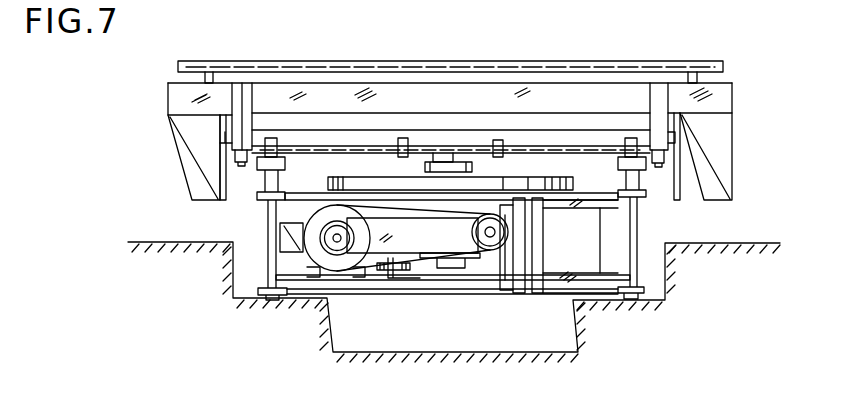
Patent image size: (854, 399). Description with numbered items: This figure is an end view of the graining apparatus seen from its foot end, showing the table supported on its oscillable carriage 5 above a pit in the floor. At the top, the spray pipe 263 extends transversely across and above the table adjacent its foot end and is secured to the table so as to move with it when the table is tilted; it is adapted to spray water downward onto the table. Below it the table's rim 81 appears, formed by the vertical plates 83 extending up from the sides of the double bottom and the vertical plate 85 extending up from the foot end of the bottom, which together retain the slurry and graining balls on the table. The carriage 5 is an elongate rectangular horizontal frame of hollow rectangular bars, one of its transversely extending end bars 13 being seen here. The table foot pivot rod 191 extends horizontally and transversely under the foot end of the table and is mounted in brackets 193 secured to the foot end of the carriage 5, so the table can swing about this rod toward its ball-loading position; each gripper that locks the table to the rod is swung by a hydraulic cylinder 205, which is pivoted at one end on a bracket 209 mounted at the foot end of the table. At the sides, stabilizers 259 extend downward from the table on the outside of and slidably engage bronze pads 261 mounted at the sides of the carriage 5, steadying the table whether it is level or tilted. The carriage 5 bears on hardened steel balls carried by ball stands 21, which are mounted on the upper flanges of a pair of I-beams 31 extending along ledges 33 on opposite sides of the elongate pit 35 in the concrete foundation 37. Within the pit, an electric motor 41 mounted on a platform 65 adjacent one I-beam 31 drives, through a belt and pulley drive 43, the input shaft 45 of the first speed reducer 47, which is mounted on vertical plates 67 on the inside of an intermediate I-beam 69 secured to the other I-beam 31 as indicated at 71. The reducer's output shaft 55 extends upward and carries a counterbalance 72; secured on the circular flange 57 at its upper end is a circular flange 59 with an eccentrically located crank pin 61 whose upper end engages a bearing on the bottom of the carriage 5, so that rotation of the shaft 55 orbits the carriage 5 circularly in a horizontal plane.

The carriage 5 is at (480, 120).
The end bar 13 is at (552, 137).
The stand 21 is at (262, 185).
The I-beam 31 is at (268, 260).
The ledge 33 is at (283, 303).
The pit 35 is at (453, 352).
The concrete foundation 37 is at (770, 222).
The electric motor 41 is at (342, 268).
The belt and pulley drive 43 is at (432, 255).
The input shaft 45 is at (496, 233).
The first speed reducer 47 is at (493, 268).
The output shaft 55 is at (445, 206).
The circular flange 57 is at (427, 168).
The circular flange 59 is at (470, 164).
The crank pin 61 is at (450, 150).
The platform 65 is at (313, 282).
The vertical plate 67 is at (515, 295).
The intermediate I-beam 69 is at (547, 207).
The securing connection 71 is at (597, 212).
The counterbalance 72 is at (330, 183).
The rim 81 is at (306, 84).
The vertical plate 83 is at (168, 100).
The vertical plate 85 is at (387, 83).
The table foot pivot rod 191 is at (600, 145).
The bracket 193 is at (398, 142).
The hydraulic cylinder 205 is at (238, 156).
The bracket 209 is at (232, 120).
The stabilizer 259 is at (200, 165).
The bronze pad 261 is at (228, 138).
The spray pipe 263 is at (627, 63).